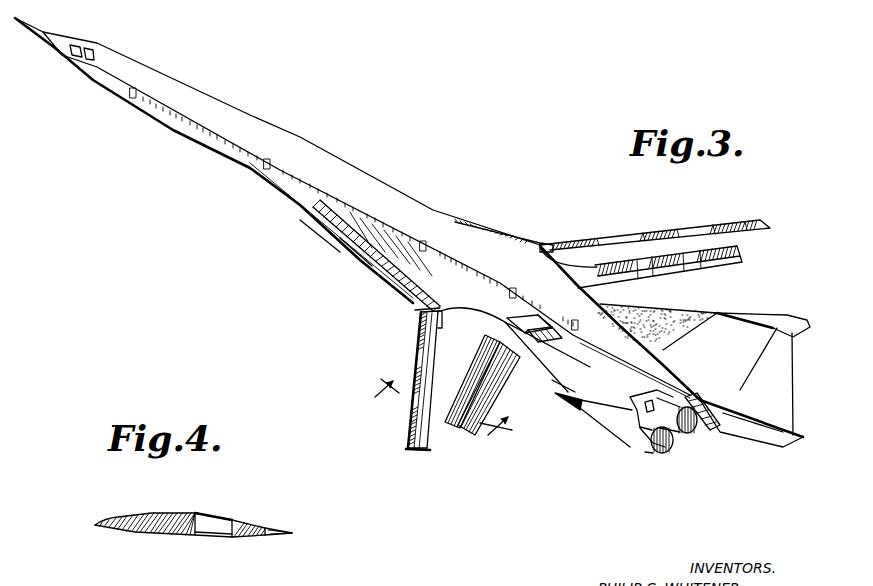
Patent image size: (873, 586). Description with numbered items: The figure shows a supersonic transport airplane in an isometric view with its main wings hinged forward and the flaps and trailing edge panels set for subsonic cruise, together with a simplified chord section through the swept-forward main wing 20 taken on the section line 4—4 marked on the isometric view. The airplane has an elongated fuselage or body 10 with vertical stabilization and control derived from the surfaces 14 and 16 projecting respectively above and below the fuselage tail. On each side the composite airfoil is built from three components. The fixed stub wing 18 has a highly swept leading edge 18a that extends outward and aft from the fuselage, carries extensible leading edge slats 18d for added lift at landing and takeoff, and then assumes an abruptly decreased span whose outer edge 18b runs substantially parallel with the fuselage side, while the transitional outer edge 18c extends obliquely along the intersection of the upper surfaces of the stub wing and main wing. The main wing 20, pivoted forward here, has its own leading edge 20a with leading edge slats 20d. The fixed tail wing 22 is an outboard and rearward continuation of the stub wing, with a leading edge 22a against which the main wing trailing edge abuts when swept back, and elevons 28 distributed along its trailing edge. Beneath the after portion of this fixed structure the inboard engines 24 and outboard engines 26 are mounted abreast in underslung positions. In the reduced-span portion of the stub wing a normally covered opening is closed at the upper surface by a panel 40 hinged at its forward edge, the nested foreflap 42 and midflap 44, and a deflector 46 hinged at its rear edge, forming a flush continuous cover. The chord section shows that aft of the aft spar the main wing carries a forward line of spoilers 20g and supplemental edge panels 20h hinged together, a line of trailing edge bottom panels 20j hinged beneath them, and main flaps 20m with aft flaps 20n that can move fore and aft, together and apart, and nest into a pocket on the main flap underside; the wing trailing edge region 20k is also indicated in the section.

In FIG. 3, the fuselage 10 is at (236, 106).
In FIG. 3, the vertical stabilizing surface 14 is at (749, 338).
In FIG. 3, the lower vertical surface 16 is at (742, 432).
In FIG. 3, the stub wing 18 is at (497, 243).
In FIG. 3, the stub wing leading edge 18a is at (373, 273).
In FIG. 3, the outer edge of reduced span portion 18b is at (505, 345).
In FIG. 3, the oblique outer edge 18c is at (462, 313).
In FIG. 3, the stub wing leading edge slats 18d is at (345, 250).
In FIG. 3, the main wing 20 is at (600, 257).
In FIG. 4, the main wing 20 is at (153, 508).
In FIG. 3, the main wing leading edge 20a is at (407, 403).
In FIG. 3, the main wing leading edge slats 20d is at (407, 445).
In FIG. 4, the spoilers 20g is at (202, 513).
In FIG. 4, the supplemental edge panels 20h is at (234, 520).
In FIG. 4, the trailing edge bottom panels 20j is at (202, 537).
In FIG. 3, the wing trailing edge 20k is at (433, 450).
In FIG. 4, the main flaps 20m is at (242, 537).
In FIG. 4, the aft flaps 20n is at (285, 537).
In FIG. 3, the tail wing 22 is at (690, 305).
In FIG. 3, the tail wing leading edge 22a is at (552, 378).
In FIG. 3, the inboard engines 24 is at (682, 437).
In FIG. 3, the outboard engines 26 is at (653, 447).
In FIG. 3, the elevons 28 is at (788, 312).
In FIG. 3, the panel 40 is at (518, 315).
In FIG. 3, the foreflap 42 is at (542, 325).
In FIG. 3, the midflap 44 is at (552, 328).
In FIG. 3, the deflector 46 is at (542, 350).
In FIG. 3, the section line 4— 4 is at (432, 407).